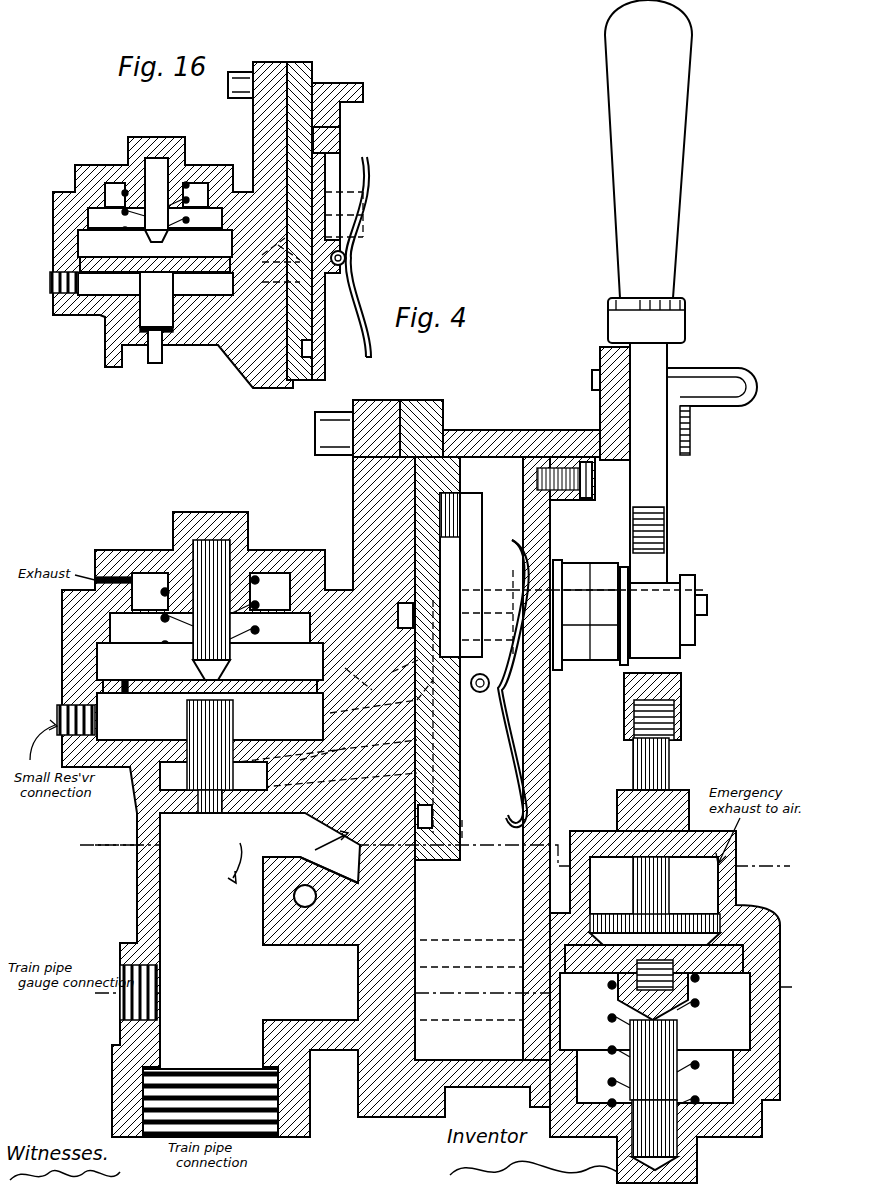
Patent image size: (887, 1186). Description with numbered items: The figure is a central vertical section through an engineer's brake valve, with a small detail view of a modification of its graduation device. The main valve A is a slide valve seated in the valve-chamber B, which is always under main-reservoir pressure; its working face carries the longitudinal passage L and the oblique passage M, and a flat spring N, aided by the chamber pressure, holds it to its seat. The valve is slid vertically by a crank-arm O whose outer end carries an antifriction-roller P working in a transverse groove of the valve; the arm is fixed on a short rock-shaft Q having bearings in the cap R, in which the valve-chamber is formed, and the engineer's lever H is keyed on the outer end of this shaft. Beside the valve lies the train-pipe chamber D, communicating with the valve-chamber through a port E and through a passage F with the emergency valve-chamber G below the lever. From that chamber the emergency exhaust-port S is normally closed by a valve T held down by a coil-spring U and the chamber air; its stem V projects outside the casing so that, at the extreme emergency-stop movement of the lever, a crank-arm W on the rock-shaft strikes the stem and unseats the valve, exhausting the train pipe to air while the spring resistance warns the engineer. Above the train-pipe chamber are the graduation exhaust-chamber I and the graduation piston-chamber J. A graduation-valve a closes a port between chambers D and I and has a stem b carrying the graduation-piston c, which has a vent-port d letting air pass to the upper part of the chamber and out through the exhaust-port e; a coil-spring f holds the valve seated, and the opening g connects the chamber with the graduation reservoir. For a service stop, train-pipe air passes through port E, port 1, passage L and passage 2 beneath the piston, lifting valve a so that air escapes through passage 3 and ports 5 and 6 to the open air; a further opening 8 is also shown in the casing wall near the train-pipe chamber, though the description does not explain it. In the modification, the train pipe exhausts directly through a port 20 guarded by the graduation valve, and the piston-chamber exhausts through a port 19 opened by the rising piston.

In FIG. 16, the main valve A is at (316, 322).
In FIG. 4, the main valve A is at (460, 760).
In FIG. 4, the valve-chamber B is at (469, 930).
In FIG. 4, the train-pipe chamber D is at (190, 867).
In FIG. 4, the port E is at (360, 880).
In FIG. 4, the passage F is at (315, 975).
In FIG. 4, the emergency valve-chamber G is at (673, 986).
In FIG. 4, the engineer's lever H is at (672, 230).
In FIG. 4, the graduation exhaust-chamber I is at (170, 780).
In FIG. 16, the graduation piston-chamber J is at (138, 245).
In FIG. 4, the graduation piston-chamber J is at (178, 665).
In FIG. 4, the longitudinal passage L is at (405, 570).
In FIG. 4, the oblique passage M is at (435, 848).
In FIG. 16, the flat spring N is at (351, 257).
In FIG. 4, the flat spring N is at (500, 700).
In FIG. 4, the crank-arm O is at (482, 532).
In FIG. 4, the antifriction-roller P is at (462, 495).
In FIG. 4, the rock-shaft Q is at (575, 575).
In FIG. 4, the cap R is at (550, 713).
In FIG. 4, the emergency exhaust-port S is at (654, 886).
In FIG. 4, the valve T is at (714, 978).
In FIG. 4, the coil-spring U is at (683, 1030).
In FIG. 4, the stem V is at (669, 762).
In FIG. 4, the crank-arm W is at (645, 518).
In FIG. 16, the graduation-valve a is at (146, 340).
In FIG. 4, the graduation-valve a is at (198, 805).
In FIG. 16, the stem b is at (165, 285).
In FIG. 4, the stem b is at (233, 716).
In FIG. 16, the graduation-piston c is at (200, 258).
In FIG. 4, the graduation-piston c is at (275, 685).
In FIG. 4, the vent-port d is at (124, 680).
In FIG. 16, the exhaust-port e is at (88, 182).
In FIG. 4, the exhaust-port e is at (192, 591).
In FIG. 16, the coil-spring f is at (120, 212).
In FIG. 4, the coil-spring f is at (165, 627).
In FIG. 16, the opening g is at (70, 286).
In FIG. 4, the opening g is at (97, 716).
In FIG. 16, the port 1 is at (285, 242).
In FIG. 4, the port 1 is at (405, 661).
In FIG. 16, the passage 2 is at (263, 243).
In FIG. 4, the passage 2 is at (357, 674).
In FIG. 4, the passage 3 is at (327, 753).
In FIG. 4, the port 5 is at (443, 989).
In FIG. 4, the port 6 is at (434, 855).
In FIG. 4, the port 8 is at (312, 902).
In FIG. 16, the port 19 is at (60, 264).
In FIG. 16, the port 20 is at (108, 322).